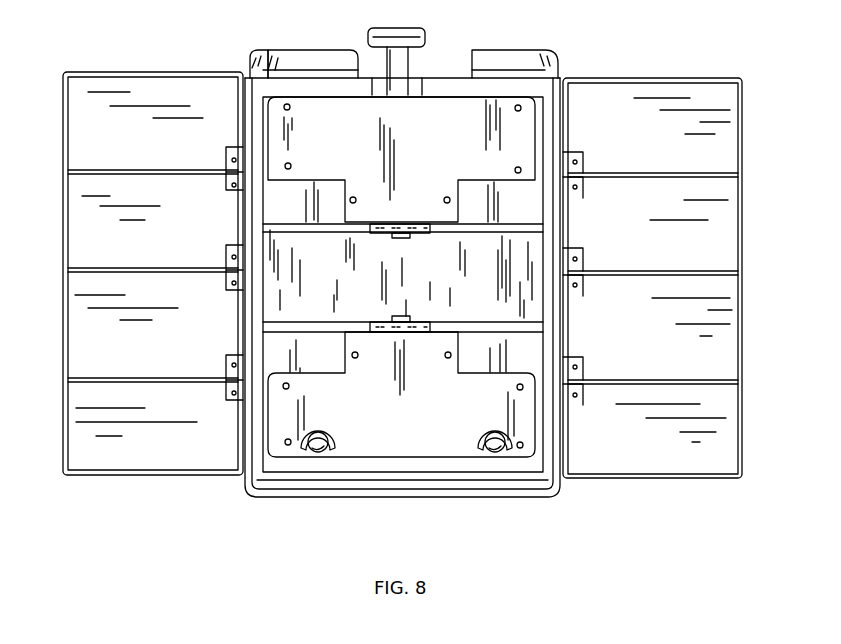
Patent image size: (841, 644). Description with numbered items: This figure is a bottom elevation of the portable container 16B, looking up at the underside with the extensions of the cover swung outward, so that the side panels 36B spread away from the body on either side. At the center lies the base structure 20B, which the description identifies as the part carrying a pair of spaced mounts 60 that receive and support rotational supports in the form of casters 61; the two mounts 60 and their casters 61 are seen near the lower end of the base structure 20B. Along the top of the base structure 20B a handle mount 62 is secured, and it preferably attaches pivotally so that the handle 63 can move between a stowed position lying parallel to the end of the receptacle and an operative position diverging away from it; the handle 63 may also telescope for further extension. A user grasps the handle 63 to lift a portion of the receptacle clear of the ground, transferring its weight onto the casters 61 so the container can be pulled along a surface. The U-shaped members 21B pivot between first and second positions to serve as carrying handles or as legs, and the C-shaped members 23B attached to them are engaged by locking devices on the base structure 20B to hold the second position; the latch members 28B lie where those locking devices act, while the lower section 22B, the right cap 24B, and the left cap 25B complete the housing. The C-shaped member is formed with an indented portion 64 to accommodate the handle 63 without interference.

The container device 16B is at (602, 64).
The base structure 20B is at (440, 448).
The U-shaped member 21B is at (282, 52).
The lower housing section 22B is at (378, 242).
The C-shaped member 23B is at (470, 322).
The right cap portion 24B is at (540, 54).
The left cap portion 25B is at (250, 66).
The latch 28B is at (416, 323).
The side panels 36B is at (186, 461).
The mount 60 is at (312, 428).
The caster 61 is at (336, 452).
The handle mount 62 is at (420, 85).
The handle 63 is at (420, 36).
The indented portion 64 is at (403, 238).